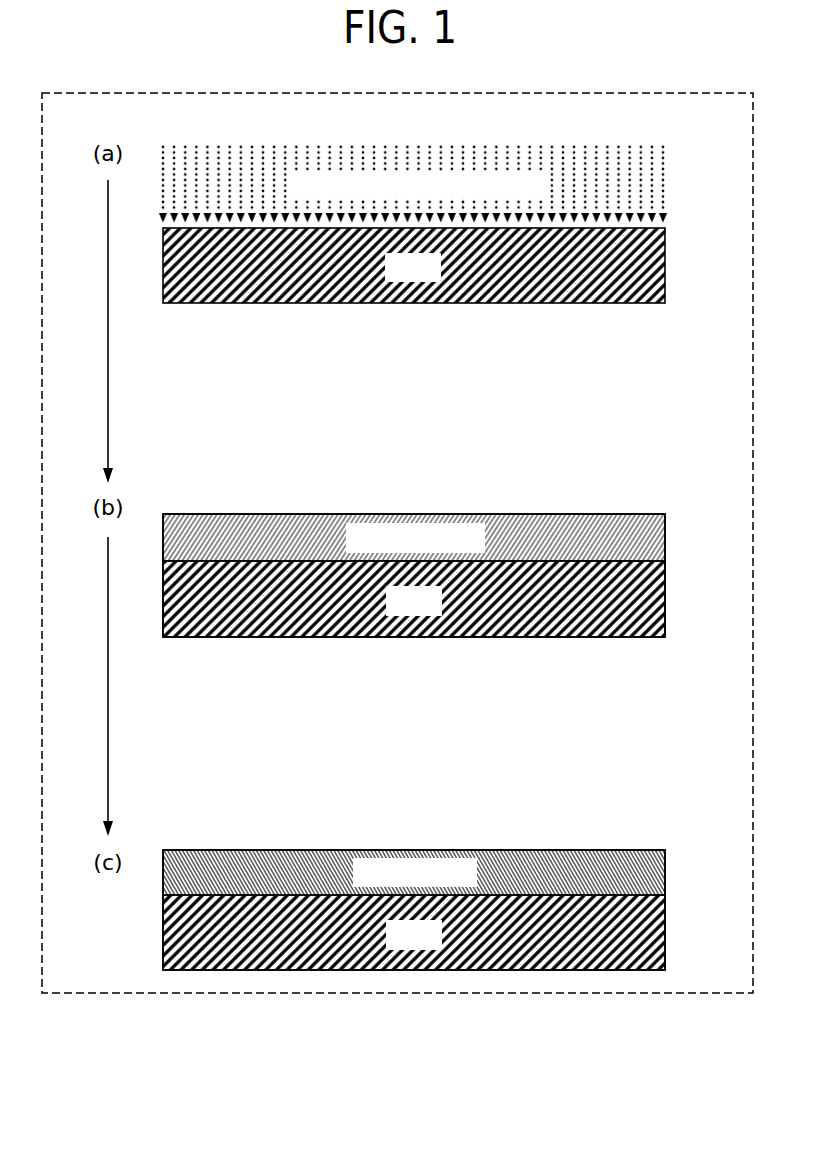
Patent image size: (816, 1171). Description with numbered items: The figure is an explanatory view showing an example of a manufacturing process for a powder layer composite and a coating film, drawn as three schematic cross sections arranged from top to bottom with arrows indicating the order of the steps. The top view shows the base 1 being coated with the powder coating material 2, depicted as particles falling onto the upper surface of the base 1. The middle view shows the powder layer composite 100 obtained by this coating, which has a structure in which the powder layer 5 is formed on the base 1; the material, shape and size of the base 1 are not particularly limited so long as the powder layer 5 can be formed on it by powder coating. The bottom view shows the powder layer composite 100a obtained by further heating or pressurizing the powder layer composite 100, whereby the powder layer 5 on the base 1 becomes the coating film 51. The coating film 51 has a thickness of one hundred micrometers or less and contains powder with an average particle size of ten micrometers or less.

The base 1 is at (665, 268).
The powder coating material 2 is at (674, 147).
The powder layer 5 is at (665, 537).
The coating film 51 is at (665, 873).
The powder layer composite 100 is at (445, 521).
The powder layer composite 100a is at (452, 855).